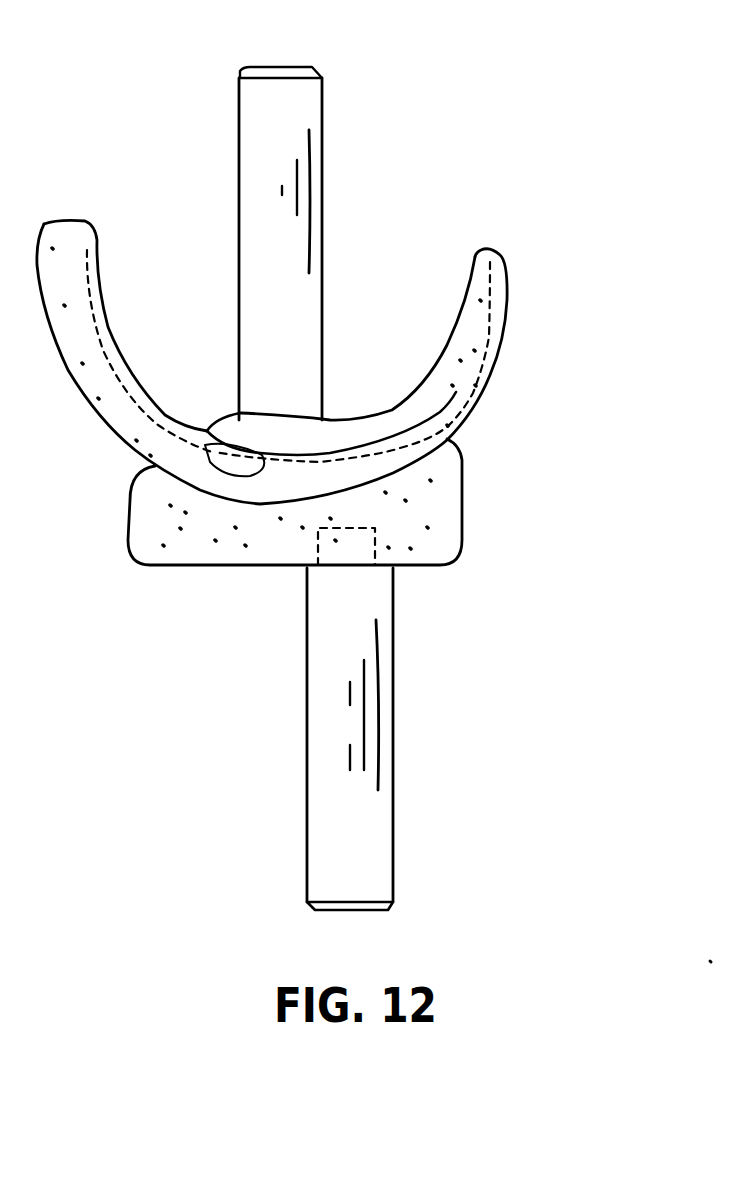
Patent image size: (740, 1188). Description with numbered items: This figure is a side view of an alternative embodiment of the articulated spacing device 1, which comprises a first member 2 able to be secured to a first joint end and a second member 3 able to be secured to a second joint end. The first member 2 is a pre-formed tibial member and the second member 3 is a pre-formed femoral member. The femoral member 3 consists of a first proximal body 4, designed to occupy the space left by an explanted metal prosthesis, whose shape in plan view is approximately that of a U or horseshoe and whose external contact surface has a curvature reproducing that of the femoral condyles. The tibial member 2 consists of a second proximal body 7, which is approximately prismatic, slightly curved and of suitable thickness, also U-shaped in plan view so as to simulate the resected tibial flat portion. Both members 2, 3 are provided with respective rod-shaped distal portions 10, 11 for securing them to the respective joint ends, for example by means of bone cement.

The articulated spacing device 1 is at (326, 296).
The first member 2 is at (366, 723).
The second member 3 is at (253, 210).
The first proximal body 4 is at (486, 358).
The second proximal body 7 is at (152, 540).
The rod-shaped distal portion 10 is at (378, 735).
The rod-shaped distal portion 11 is at (298, 226).